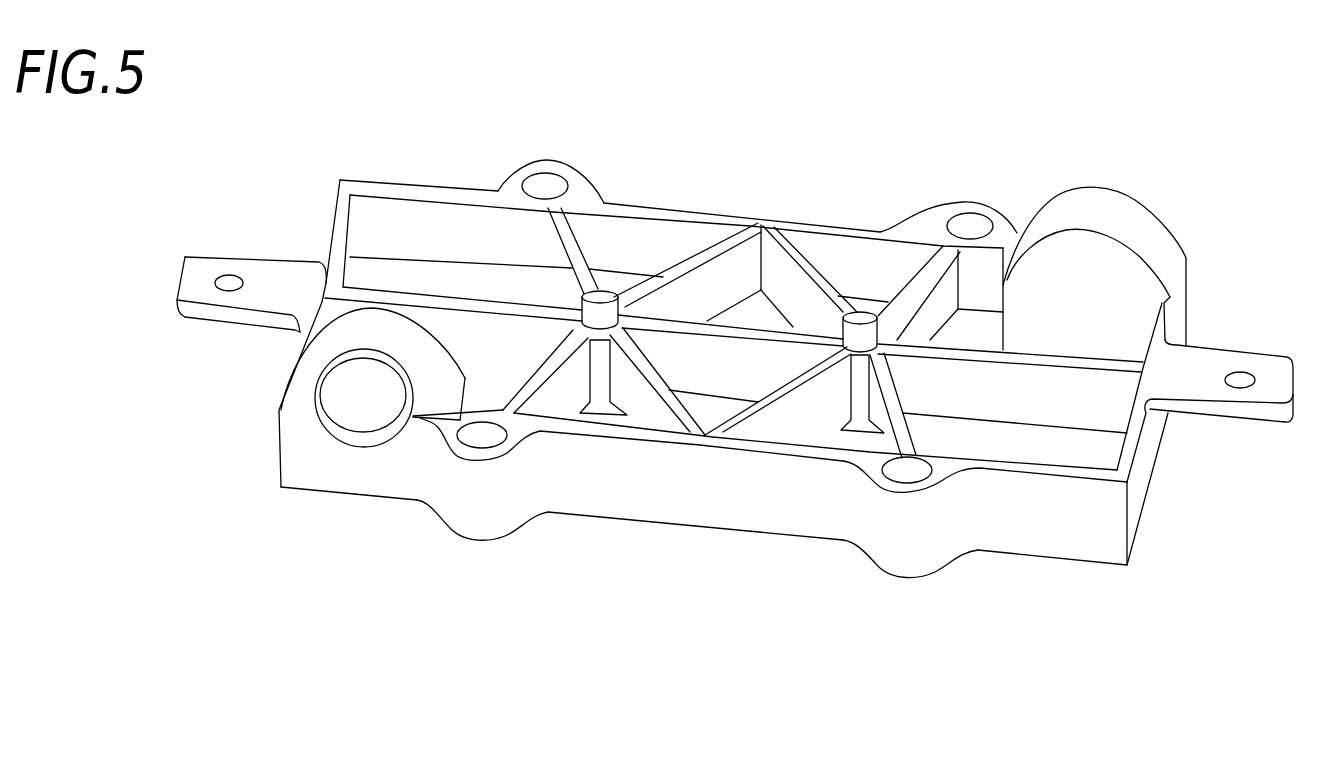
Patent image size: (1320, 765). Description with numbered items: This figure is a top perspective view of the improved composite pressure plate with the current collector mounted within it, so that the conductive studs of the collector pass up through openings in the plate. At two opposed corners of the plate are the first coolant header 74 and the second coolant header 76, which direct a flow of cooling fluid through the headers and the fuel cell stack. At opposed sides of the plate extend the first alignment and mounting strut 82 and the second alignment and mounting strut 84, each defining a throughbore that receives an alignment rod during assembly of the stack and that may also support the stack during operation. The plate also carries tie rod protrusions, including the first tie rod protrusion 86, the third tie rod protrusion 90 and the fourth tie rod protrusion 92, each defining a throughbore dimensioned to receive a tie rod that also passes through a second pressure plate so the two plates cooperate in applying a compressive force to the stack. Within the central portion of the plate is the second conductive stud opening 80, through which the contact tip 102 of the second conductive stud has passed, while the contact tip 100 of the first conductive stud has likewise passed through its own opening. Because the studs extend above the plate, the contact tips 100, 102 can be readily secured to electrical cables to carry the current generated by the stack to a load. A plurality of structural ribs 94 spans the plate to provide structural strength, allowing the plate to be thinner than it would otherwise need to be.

The first coolant header 74 is at (340, 390).
The second coolant header 76 is at (1124, 205).
The second conductive stud opening 80 is at (983, 208).
The first alignment and mounting strut 82 is at (244, 263).
The second alignment and mounting strut 84 is at (1265, 365).
The first tie rod protrusion 86 is at (562, 170).
The third tie rod protrusion 90 is at (920, 550).
The fourth tie rod protrusion 92 is at (495, 512).
The structural ribs 94 is at (557, 257).
The contact tip 100 is at (598, 293).
The contact tip 102 is at (861, 313).